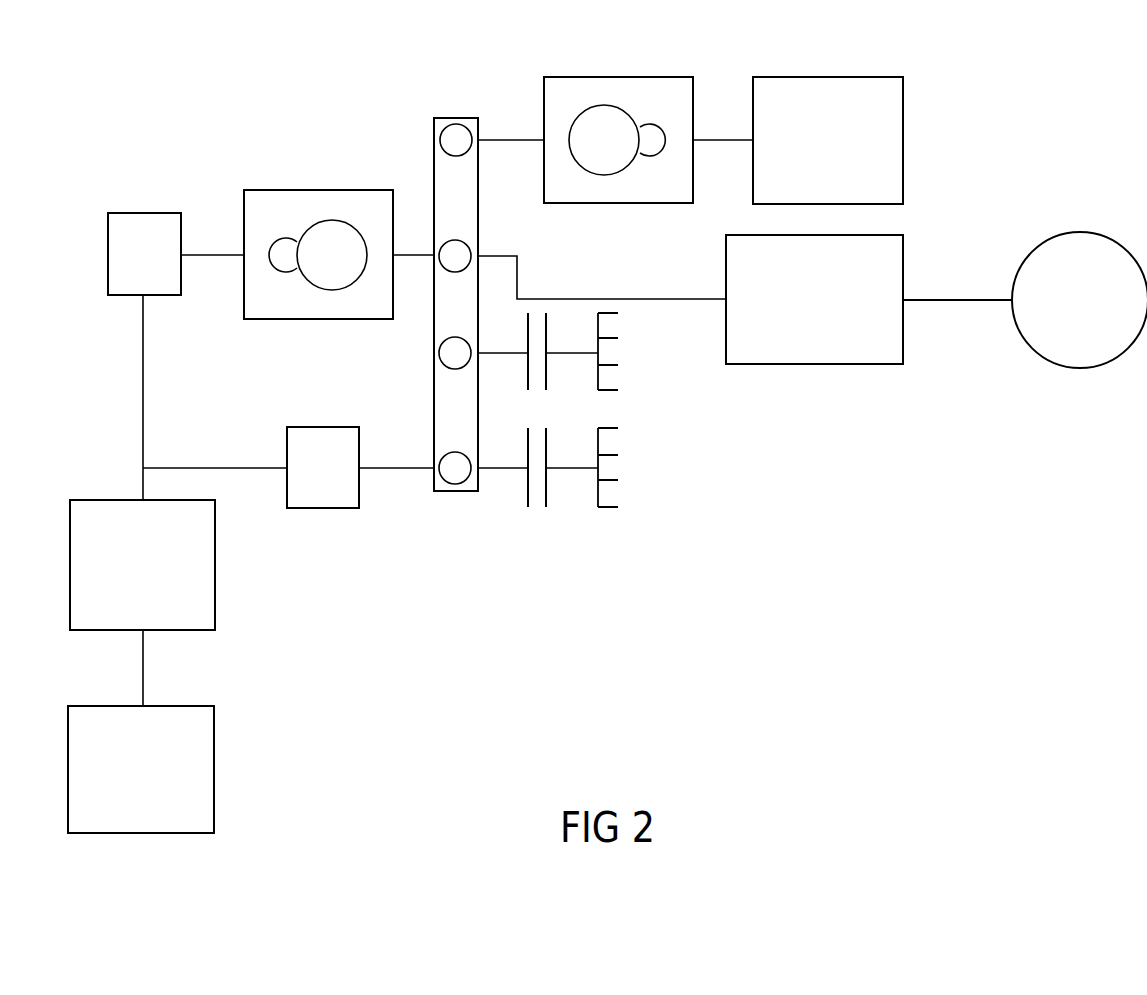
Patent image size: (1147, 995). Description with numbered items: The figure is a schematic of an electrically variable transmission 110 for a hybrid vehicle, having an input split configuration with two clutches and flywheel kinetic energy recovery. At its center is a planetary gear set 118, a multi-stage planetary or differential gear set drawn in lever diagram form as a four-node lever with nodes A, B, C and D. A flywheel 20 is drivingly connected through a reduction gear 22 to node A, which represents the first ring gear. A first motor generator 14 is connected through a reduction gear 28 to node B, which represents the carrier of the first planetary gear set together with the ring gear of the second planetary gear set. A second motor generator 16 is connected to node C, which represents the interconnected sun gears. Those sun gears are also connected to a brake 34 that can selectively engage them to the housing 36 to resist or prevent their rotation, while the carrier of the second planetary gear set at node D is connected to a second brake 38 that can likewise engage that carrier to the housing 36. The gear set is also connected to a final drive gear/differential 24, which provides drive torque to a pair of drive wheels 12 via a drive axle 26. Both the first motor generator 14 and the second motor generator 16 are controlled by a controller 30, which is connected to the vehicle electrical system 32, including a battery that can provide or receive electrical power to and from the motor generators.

The electrically variable transmission 110 is at (927, 118).
The planetary gear set 118 is at (455, 118).
The drive wheels 12 is at (1092, 312).
The first motor generator 14 is at (156, 266).
The second motor generator 16 is at (335, 480).
The flywheel 20 is at (840, 152).
The reduction gear 22 is at (616, 152).
The final drive gear/differential 24 is at (826, 312).
The drive axle 26 is at (957, 302).
The reduction gear 28 is at (344, 267).
The controller 30 is at (154, 577).
The vehicle electrical system 32 is at (154, 782).
The brake 34 is at (537, 507).
The housing 36 is at (605, 363).
The second brake 38 is at (537, 388).